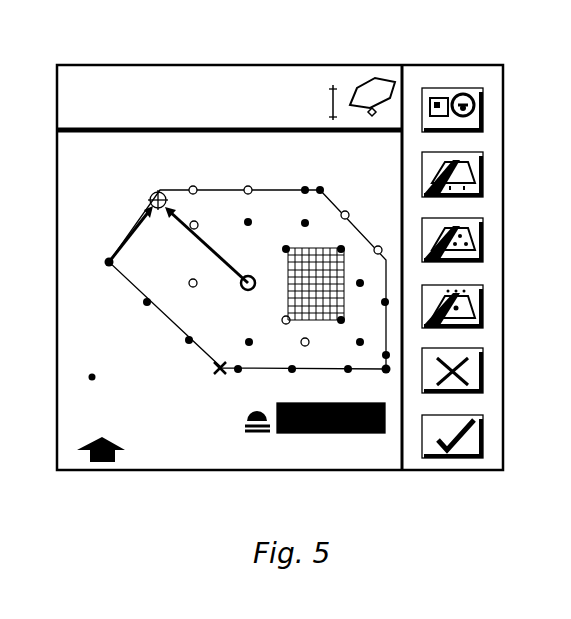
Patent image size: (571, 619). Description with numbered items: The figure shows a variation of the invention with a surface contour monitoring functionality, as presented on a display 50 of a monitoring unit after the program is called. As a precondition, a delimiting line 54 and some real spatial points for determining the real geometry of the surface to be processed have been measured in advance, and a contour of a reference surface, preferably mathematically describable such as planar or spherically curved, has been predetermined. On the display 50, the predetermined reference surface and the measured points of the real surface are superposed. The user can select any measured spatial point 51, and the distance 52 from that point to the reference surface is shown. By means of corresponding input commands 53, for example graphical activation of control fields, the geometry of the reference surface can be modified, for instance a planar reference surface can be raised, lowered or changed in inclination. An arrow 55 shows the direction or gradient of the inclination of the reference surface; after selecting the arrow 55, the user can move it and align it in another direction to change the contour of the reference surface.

The display 50 is at (280, 245).
The measured spatial point 51 is at (268, 430).
The distance 52 is at (228, 452).
The input commands 53 is at (494, 273).
The delimiting line 54 is at (249, 205).
The arrow 55 is at (225, 262).